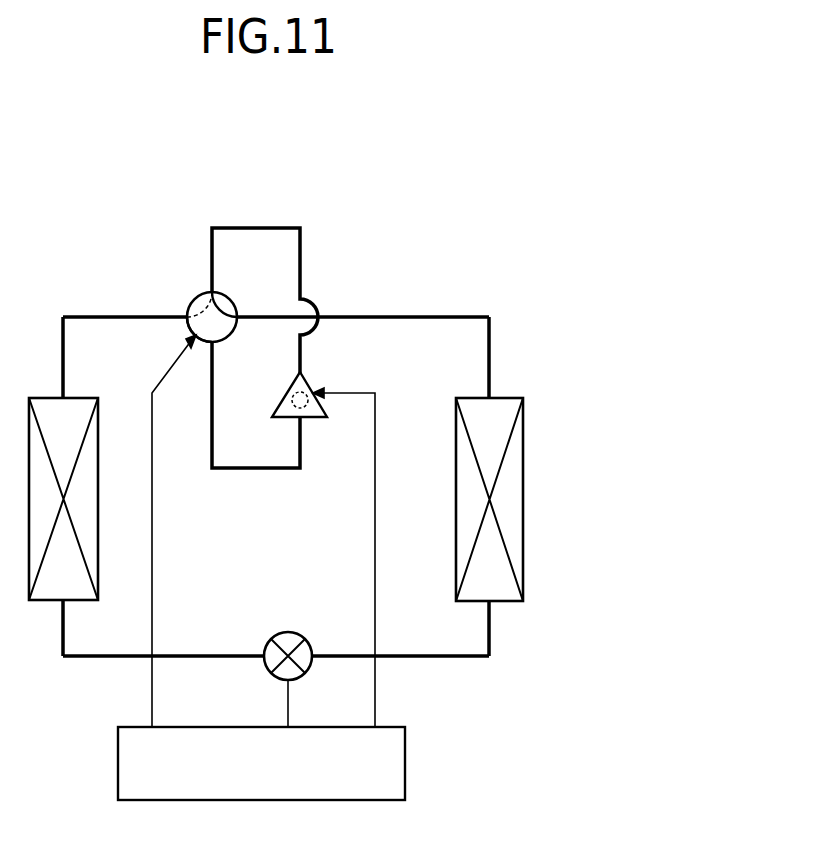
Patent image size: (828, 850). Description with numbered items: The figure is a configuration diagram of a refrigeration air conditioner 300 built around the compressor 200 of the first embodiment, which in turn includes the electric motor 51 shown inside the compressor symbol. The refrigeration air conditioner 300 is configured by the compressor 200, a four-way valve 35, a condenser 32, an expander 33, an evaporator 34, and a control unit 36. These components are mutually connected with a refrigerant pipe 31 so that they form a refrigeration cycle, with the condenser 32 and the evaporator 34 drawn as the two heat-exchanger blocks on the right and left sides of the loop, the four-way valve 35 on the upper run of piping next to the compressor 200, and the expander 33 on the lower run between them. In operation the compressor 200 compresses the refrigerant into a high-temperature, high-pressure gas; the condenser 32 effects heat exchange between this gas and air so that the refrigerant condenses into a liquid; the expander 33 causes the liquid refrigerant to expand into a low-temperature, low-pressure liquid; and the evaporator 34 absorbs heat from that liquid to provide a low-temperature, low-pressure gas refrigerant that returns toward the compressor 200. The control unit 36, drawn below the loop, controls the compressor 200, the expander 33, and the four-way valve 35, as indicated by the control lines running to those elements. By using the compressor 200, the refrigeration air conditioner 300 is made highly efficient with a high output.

The refrigeration air conditioner 300 is at (444, 184).
The refrigerant pipe 31 is at (455, 316).
The condenser 32 is at (509, 397).
The expander 33 is at (285, 632).
The evaporator 34 is at (47, 397).
The four-way valve 35 is at (192, 300).
The control unit 36 is at (210, 726).
The compressor 200 is at (310, 384).
The electric motor 51 is at (305, 406).